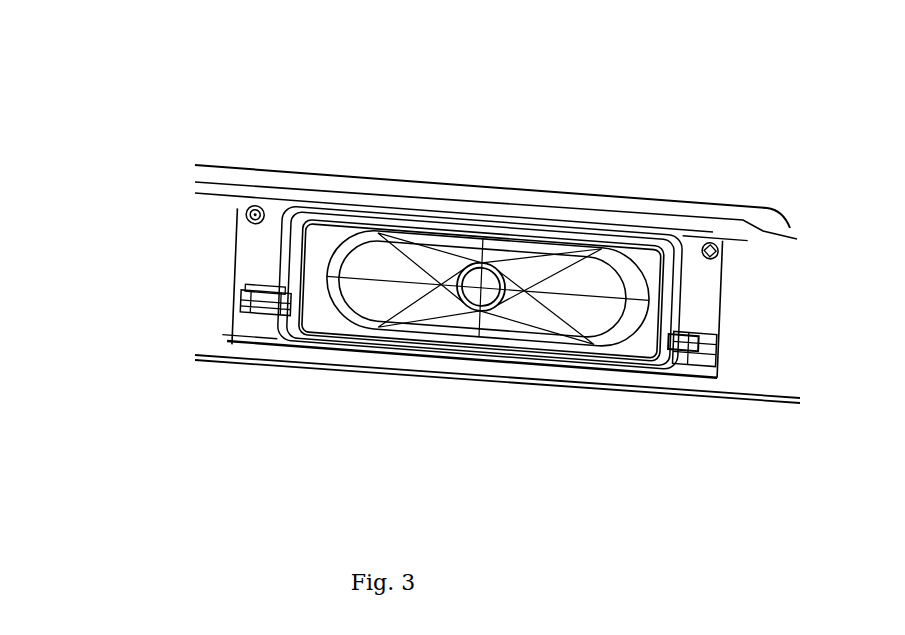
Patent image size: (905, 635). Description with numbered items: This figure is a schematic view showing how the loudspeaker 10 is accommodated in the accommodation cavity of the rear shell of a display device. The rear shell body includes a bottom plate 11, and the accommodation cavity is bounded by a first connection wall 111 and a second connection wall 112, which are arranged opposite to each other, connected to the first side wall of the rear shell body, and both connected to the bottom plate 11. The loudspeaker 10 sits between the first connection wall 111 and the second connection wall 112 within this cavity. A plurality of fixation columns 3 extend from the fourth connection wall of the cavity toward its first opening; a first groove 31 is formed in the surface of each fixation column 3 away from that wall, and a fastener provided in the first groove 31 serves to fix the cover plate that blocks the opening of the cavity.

The fixation column 3 is at (256, 200).
The loudspeaker 10 is at (312, 330).
The bottom plate 11 is at (470, 187).
The first groove 31 is at (245, 213).
The first connection wall 111 is at (228, 259).
The second connection wall 112 is at (712, 323).